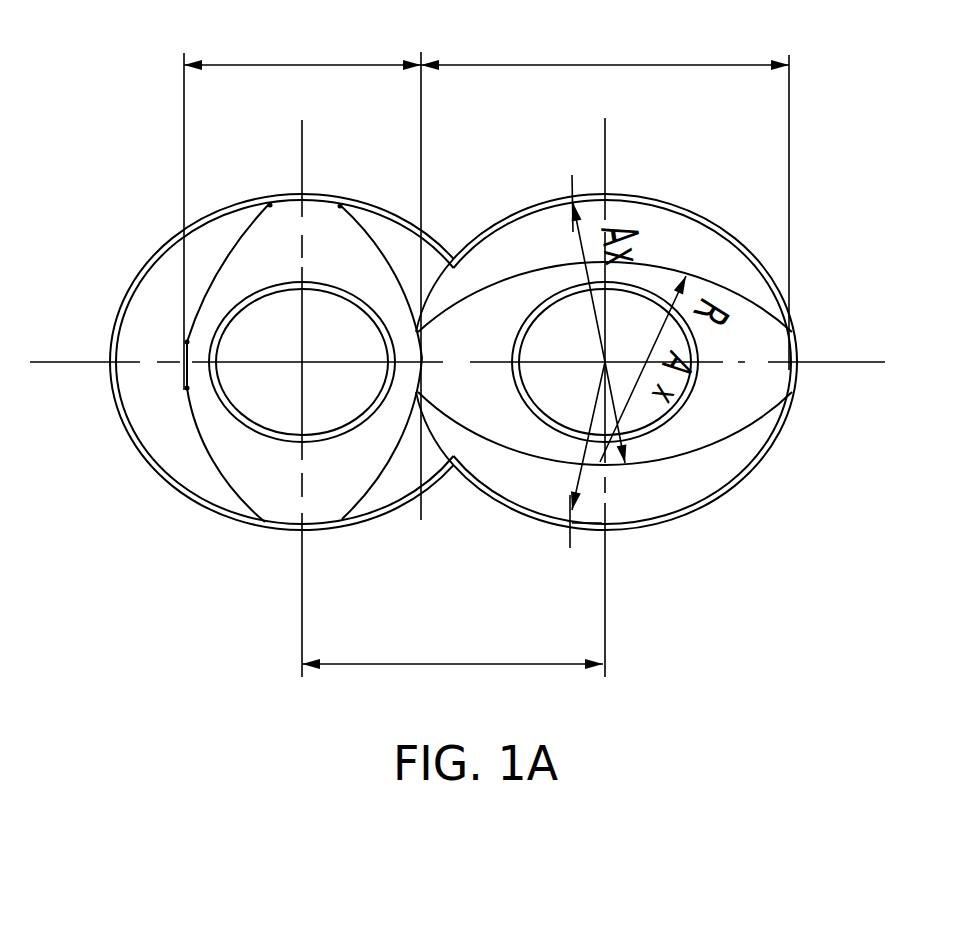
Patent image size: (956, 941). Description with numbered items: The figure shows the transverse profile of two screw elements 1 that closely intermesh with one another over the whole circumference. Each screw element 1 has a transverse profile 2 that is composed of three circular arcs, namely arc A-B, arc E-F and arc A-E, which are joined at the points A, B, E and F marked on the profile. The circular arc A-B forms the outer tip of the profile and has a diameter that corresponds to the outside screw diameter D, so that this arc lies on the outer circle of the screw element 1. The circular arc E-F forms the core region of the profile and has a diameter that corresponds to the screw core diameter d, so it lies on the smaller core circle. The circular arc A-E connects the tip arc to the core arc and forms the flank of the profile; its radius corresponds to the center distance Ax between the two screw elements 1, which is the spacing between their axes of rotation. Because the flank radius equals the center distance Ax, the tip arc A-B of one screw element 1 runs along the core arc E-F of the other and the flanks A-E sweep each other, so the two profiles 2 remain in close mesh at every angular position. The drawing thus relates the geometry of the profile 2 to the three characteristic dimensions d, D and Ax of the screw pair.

The screw element 1 is at (180, 432).
The transverse profile 2 is at (225, 482).
The point A is at (255, 184).
The point B is at (347, 184).
The point E is at (159, 339).
The point F is at (160, 387).
The screw core diameter d is at (302, 263).
The outside screw diameter D is at (605, 198).
The center distance Ax is at (452, 645).